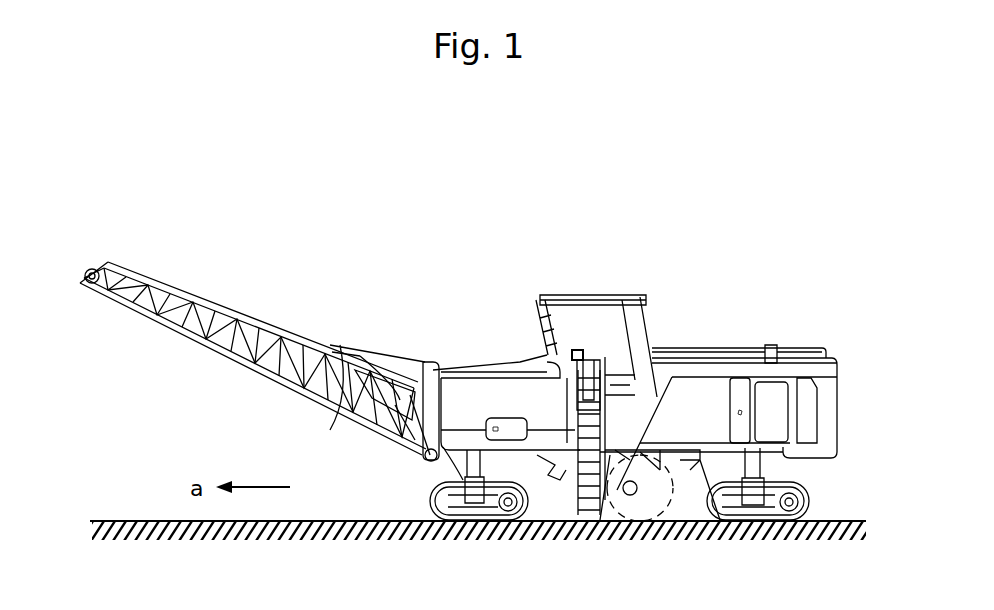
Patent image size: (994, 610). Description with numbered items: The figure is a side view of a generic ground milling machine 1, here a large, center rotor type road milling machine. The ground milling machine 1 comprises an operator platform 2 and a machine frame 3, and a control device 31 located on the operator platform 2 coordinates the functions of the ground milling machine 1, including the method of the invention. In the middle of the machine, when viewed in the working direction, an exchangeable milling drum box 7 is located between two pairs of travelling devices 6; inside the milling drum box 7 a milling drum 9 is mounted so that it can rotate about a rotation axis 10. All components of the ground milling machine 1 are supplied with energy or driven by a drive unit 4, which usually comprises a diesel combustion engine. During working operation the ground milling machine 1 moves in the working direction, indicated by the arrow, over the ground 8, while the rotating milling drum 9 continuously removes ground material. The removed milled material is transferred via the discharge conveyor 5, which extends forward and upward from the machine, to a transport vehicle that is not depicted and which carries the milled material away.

The ground milling machine 1 is at (660, 266).
The operator platform 2 is at (615, 335).
The machine frame 3 is at (505, 398).
The control device 31 is at (574, 352).
The drive unit 4 is at (710, 395).
The discharge conveyor 5 is at (293, 347).
The travelling devices 6 is at (505, 503).
The milling drum box 7 is at (676, 504).
The ground 8 is at (320, 532).
The milling drum 9 is at (650, 513).
The rotation axis 10 is at (625, 498).